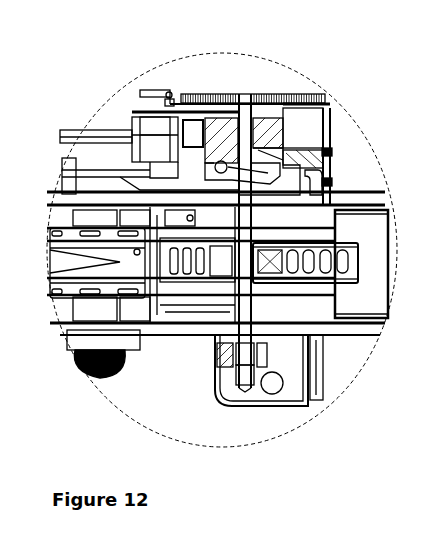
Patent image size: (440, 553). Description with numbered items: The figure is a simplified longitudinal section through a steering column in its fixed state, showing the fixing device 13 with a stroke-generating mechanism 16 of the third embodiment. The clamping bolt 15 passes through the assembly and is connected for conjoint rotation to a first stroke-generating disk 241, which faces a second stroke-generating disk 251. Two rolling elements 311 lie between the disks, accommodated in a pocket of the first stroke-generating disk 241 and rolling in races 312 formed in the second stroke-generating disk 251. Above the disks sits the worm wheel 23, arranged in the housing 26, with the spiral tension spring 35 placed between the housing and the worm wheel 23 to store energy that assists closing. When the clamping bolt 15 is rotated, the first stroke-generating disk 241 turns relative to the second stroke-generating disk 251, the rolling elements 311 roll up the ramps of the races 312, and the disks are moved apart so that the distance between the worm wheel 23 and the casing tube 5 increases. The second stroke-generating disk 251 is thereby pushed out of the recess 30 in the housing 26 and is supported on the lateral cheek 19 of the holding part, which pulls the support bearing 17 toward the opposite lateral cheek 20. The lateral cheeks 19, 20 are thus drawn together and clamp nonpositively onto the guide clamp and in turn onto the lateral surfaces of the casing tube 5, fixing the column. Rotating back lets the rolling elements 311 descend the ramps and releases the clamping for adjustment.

The casing tube 5 is at (370, 230).
The electromechanical fixing device 13 is at (216, 84).
The clamping bolt 15 is at (243, 378).
The stroke-generating mechanism 16 is at (290, 140).
The support bearing 17 is at (230, 380).
The lateral cheek 19 is at (150, 185).
The lateral cheek 20 is at (205, 334).
The worm wheel 23 is at (310, 124).
The housing 26 is at (168, 188).
The recess 30 is at (326, 152).
The spiral tension spring 35 is at (286, 128).
The first stroke-generating disk 241 is at (246, 155).
The second stroke-generating disk 251 is at (332, 178).
The rolling elements 311 is at (195, 130).
The races 312 is at (342, 278).